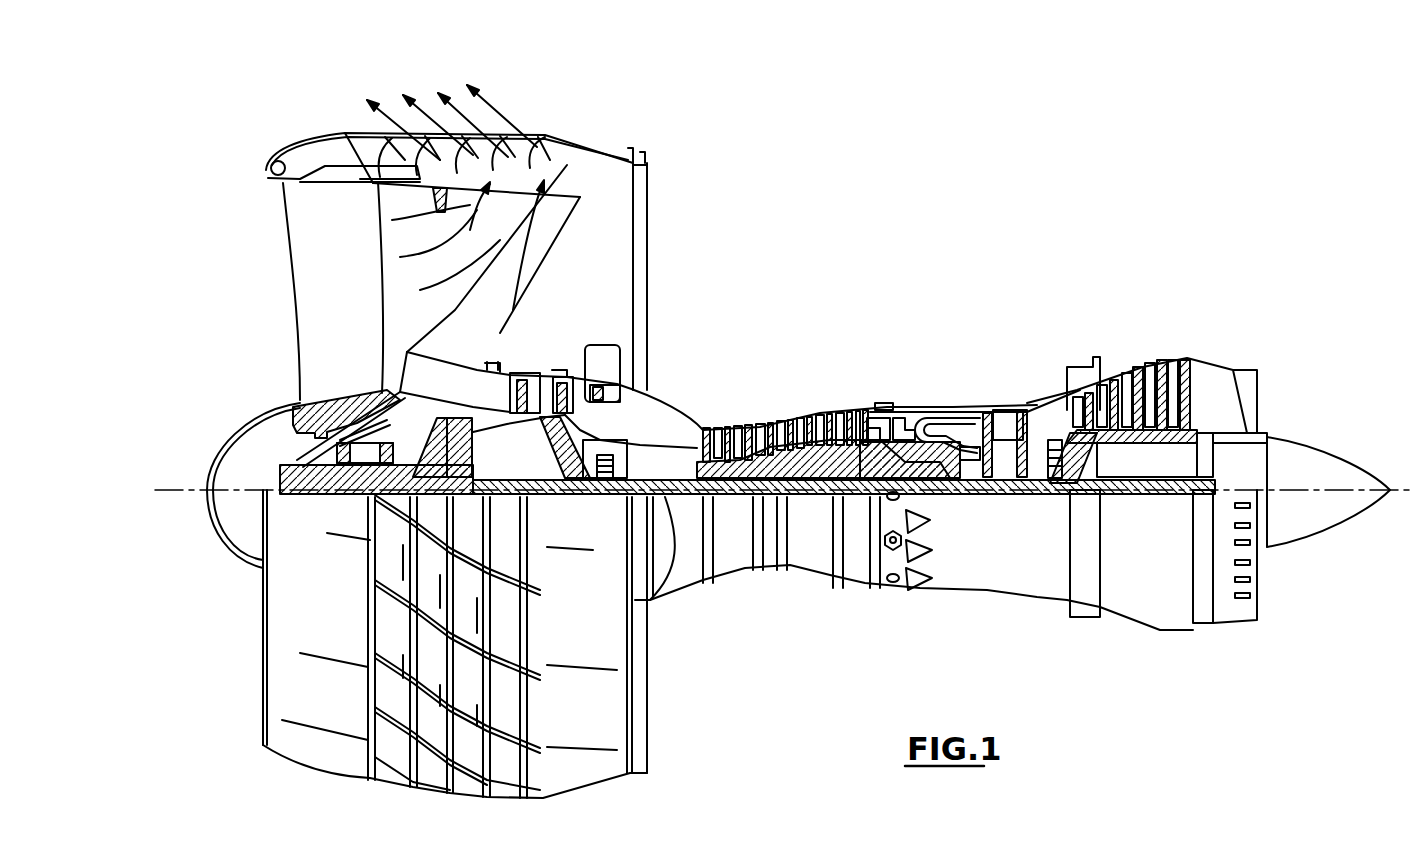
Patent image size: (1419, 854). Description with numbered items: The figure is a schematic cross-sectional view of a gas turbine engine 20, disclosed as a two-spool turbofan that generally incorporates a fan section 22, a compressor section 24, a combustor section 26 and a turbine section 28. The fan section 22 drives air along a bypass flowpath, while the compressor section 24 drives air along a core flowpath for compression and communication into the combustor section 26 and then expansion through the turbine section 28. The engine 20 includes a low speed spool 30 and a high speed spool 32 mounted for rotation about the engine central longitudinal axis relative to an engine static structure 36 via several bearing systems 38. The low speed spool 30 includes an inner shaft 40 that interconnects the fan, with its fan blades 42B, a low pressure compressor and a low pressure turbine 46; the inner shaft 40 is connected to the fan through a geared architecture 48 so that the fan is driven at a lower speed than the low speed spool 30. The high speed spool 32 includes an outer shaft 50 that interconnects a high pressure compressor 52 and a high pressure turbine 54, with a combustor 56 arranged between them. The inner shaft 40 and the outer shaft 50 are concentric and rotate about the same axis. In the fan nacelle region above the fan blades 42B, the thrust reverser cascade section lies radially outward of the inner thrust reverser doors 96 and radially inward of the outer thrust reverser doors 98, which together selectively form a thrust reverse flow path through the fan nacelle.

The gas turbine engine 20 is at (955, 240).
The fan section 22 is at (607, 134).
The compressor section 24 is at (702, 396).
The combustor section 26 is at (932, 386).
The turbine section 28 is at (1088, 347).
The low speed spool 30 is at (812, 497).
The high speed spool 32 is at (851, 455).
The engine static structure 36 is at (855, 591).
The bearing systems 38 is at (600, 492).
The inner shaft 40 is at (668, 497).
The fan blades 42B is at (362, 261).
The low pressure turbine 46 is at (1138, 380).
The geared architecture 48 is at (462, 472).
The outer shaft 50 is at (938, 480).
The high pressure compressor 52 is at (795, 462).
The high pressure turbine 54 is at (1005, 408).
The combustor 56 is at (935, 428).
The inner thrust reverser doors 96 is at (529, 201).
The outer thrust reverser doors 98 is at (447, 87).